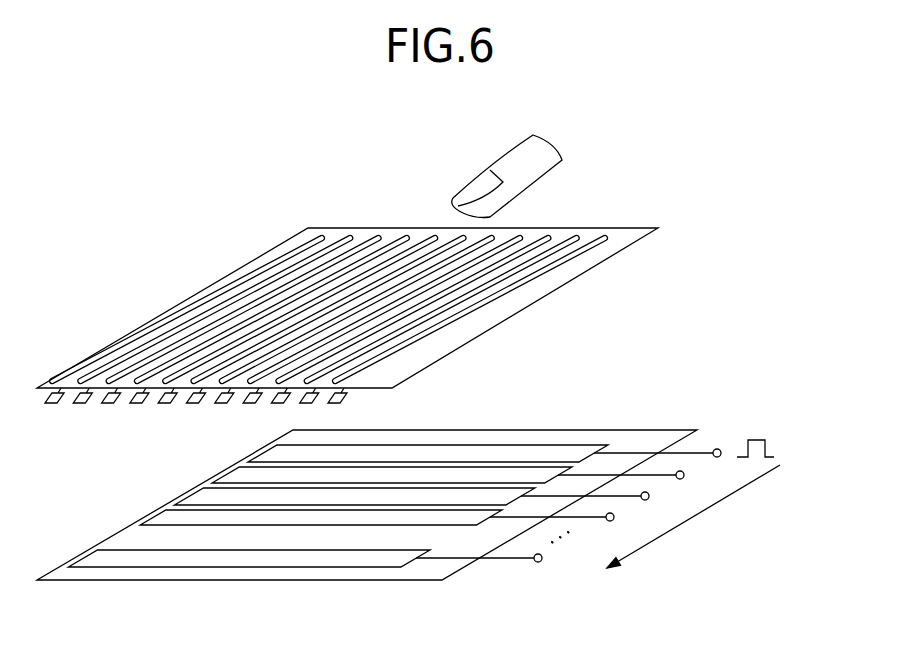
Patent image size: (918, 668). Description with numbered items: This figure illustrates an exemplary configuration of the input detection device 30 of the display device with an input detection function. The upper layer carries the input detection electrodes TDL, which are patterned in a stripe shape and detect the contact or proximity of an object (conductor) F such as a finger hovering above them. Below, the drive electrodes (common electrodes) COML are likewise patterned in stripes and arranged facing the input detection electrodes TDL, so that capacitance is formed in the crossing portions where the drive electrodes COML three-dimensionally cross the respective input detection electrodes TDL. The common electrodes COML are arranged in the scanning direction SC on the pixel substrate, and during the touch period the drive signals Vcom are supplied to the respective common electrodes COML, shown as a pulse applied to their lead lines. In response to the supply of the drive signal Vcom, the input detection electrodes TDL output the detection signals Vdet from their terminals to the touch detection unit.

The input detection device 30 is at (647, 207).
The object (conductor) F is at (510, 170).
The input detection electrodes TDL is at (603, 243).
The detection signals Vdet is at (348, 405).
The drive electrodes (common electrodes) COML is at (366, 580).
The drive signals Vcom is at (752, 440).
The scanning direction SC is at (679, 532).